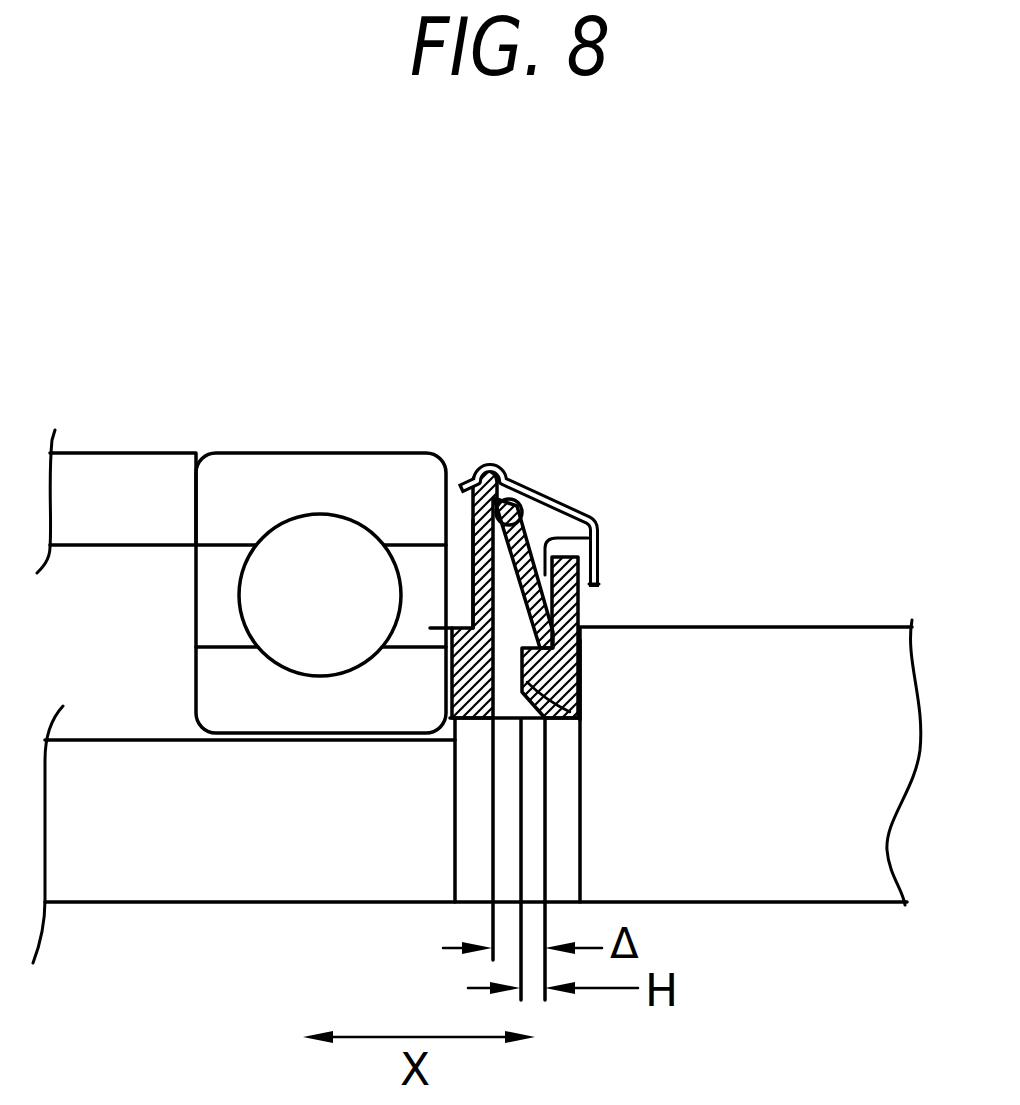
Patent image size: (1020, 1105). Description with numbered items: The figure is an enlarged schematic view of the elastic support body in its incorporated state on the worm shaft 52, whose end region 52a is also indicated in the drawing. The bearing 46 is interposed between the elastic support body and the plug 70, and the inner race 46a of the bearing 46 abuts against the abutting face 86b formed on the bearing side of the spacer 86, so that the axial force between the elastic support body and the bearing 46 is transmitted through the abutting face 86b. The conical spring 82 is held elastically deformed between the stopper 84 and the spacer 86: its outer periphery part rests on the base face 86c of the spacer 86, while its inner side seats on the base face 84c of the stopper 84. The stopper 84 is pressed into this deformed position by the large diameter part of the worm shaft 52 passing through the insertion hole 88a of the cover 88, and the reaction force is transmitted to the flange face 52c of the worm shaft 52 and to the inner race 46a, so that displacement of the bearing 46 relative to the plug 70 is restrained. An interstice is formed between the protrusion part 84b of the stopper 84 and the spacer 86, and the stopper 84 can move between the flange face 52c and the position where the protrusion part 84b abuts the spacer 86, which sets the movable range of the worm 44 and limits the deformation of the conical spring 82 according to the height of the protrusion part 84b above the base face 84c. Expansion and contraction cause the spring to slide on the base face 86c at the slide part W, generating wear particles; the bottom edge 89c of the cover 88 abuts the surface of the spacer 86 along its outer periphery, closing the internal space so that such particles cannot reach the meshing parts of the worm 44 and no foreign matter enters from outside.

The plug 70 is at (122, 478).
The bearing 46 is at (272, 440).
The inner race 46a is at (193, 690).
The worm 44 is at (818, 642).
The worm shaft 52 is at (778, 612).
The end face of rotating member 52a is at (733, 858).
The flange face 52c is at (582, 675).
The spacer 86 is at (470, 484).
The abutting face 86b is at (457, 740).
The base face 86c is at (473, 597).
The conical spring 82 is at (550, 500).
The slide part W is at (514, 480).
The cover 88 is at (562, 508).
The insertion hole 88a is at (597, 598).
The bottom edge 89c is at (490, 462).
The stopper 84 is at (604, 556).
The protrusion part 84b is at (582, 718).
The base face 84c is at (592, 546).